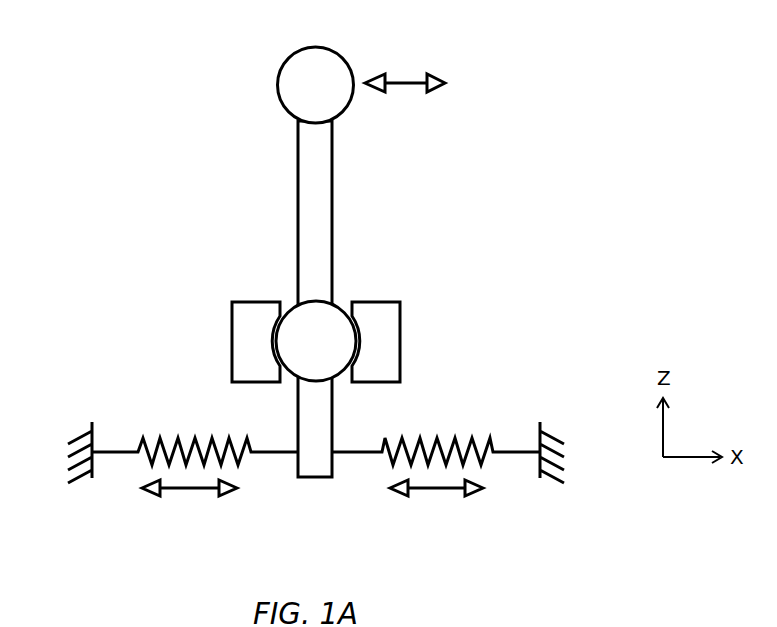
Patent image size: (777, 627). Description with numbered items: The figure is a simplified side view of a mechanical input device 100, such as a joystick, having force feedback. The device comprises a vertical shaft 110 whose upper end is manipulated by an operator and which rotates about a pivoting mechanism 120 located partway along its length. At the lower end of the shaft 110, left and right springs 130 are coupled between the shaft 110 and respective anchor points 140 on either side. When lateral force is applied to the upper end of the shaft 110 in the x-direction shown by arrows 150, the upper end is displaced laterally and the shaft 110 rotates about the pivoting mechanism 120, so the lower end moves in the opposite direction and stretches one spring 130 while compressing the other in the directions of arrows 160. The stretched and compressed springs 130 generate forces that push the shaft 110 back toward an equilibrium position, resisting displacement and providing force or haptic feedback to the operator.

The mechanical input device 100 is at (298, 50).
The shaft 110 is at (298, 200).
The pivoting mechanism 120 is at (316, 342).
The springs 130 is at (178, 438).
The anchor points 140 is at (92, 424).
The arrows 150 is at (406, 80).
The arrows 160 is at (193, 490).